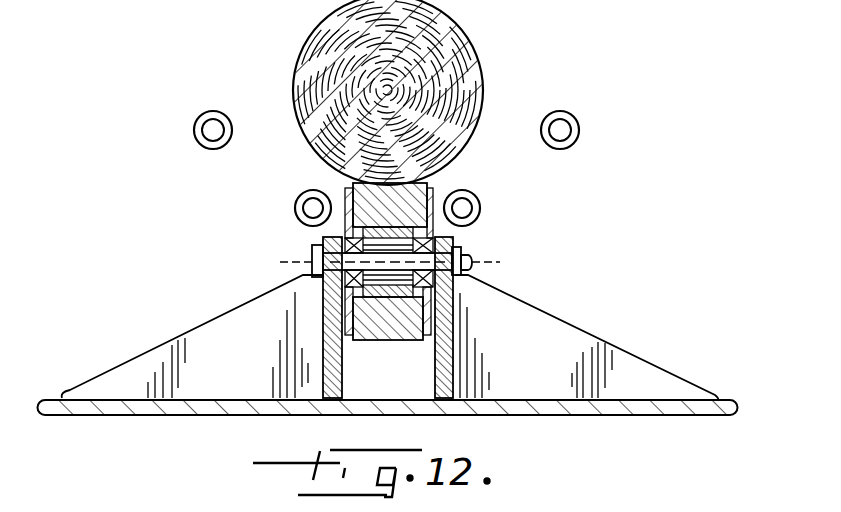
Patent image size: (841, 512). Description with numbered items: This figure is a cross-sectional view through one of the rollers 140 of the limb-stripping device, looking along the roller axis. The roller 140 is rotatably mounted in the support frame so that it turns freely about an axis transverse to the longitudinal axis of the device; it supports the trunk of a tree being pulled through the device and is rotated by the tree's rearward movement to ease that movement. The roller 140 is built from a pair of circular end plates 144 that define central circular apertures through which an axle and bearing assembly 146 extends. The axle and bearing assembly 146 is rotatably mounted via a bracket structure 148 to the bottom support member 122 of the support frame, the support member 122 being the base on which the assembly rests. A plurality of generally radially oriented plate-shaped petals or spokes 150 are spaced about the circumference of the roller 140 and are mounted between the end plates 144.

The bottom support member 122 is at (657, 413).
The roller 140 is at (326, 181).
The circular end plate 144 is at (343, 226).
The axle and bearing assembly 146 is at (484, 250).
The bracket structure 148 is at (232, 305).
The spoke 150 is at (402, 183).